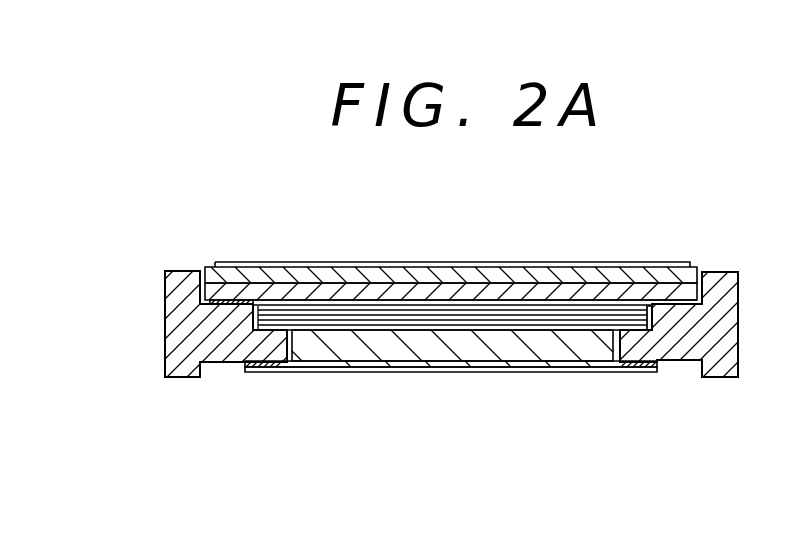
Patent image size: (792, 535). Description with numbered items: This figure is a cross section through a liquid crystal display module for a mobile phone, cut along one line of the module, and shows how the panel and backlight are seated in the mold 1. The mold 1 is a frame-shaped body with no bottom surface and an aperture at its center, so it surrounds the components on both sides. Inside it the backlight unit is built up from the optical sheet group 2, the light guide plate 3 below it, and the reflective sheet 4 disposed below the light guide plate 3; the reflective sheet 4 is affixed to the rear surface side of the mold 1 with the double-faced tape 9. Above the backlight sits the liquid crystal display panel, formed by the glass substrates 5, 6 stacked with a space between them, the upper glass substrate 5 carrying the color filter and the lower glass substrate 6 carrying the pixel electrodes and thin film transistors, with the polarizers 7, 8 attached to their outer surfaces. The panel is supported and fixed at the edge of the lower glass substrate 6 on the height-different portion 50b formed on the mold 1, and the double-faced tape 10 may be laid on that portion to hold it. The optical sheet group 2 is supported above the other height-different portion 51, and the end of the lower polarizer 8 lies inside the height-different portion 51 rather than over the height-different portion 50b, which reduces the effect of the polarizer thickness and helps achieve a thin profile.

The mold 1 is at (727, 277).
The optical sheet group 2 is at (651, 318).
The light guide plate 3 is at (436, 352).
The reflective sheet 4 is at (358, 372).
The glass substrate 5 is at (341, 291).
The glass substrate 6 is at (384, 297).
The polarizer 7 is at (288, 274).
The lower polarizer 8 is at (421, 311).
The double-faced tape 9 is at (268, 366).
The double-faced tape 10 is at (235, 302).
The height-different portion 51 is at (253, 330).
The height-different portion 50b is at (232, 305).